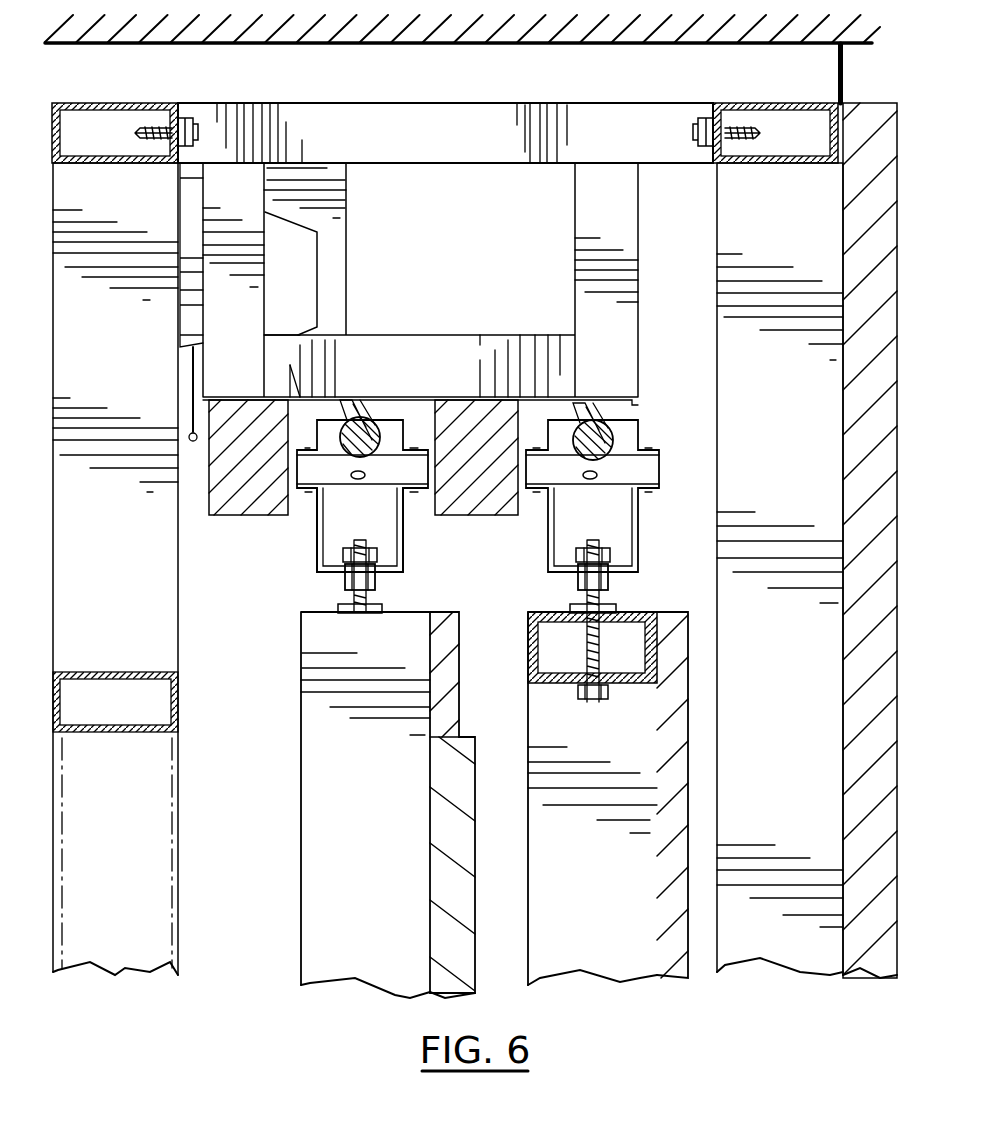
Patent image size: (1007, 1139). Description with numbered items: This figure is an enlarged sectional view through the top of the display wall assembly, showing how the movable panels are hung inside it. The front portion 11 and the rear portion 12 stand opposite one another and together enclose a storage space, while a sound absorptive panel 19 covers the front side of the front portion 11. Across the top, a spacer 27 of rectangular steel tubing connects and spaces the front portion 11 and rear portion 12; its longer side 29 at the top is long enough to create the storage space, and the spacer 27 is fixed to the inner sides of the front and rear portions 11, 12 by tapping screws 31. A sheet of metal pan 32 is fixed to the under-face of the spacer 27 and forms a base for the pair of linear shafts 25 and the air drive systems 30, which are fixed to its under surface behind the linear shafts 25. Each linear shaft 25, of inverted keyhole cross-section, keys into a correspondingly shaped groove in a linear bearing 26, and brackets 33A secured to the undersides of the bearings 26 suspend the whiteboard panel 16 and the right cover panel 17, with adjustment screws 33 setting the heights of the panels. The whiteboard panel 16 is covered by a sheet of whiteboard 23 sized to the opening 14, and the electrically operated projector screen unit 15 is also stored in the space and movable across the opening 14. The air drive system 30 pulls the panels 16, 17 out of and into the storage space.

The front portion 11 is at (792, 185).
The rear portion 12 is at (107, 175).
The opening 14 is at (160, 812).
The projector screen unit 15 is at (185, 335).
The whiteboard panel 16 is at (310, 705).
The right cover panel 17 is at (550, 838).
The sound absorptive panel 19 is at (880, 120).
The sheet of whiteboard 23 is at (452, 945).
The linear shafts 25 is at (345, 432).
The linear bearings 26 is at (390, 418).
The spacers 27 is at (618, 223).
The longer side 29 is at (460, 122).
The air drive system 30 is at (240, 495).
The tapping screws 31 is at (186, 120).
The sheet of metal pan 32 is at (295, 397).
The adjustment screws 33 is at (345, 575).
The brackets 33A is at (317, 549).